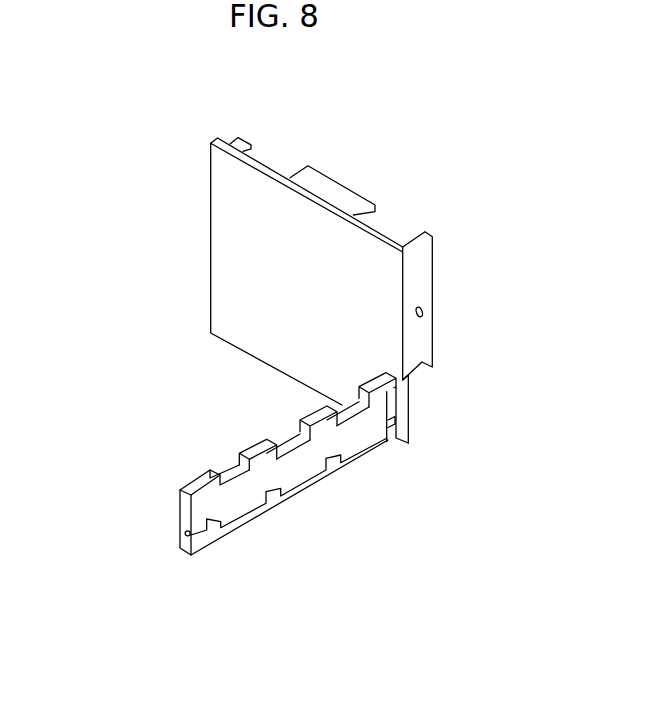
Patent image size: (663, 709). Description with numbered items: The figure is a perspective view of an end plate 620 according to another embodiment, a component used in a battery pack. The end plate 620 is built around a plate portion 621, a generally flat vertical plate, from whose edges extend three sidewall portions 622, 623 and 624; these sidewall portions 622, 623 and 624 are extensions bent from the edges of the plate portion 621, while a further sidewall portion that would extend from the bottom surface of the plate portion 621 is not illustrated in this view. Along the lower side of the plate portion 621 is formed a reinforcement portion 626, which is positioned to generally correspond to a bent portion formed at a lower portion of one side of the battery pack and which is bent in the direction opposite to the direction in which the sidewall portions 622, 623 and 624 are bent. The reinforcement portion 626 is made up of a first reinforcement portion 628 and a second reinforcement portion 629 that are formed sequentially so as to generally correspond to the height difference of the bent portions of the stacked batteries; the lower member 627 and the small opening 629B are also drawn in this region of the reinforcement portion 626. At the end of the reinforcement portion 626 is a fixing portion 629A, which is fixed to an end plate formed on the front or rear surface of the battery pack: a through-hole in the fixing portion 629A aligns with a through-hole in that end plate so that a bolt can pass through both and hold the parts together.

The end plate 620 is at (55, 85).
The plate portion 621 is at (383, 221).
The sidewall portion 622 is at (333, 190).
The sidewall portion 623 is at (242, 139).
The sidewall portion 624 is at (422, 275).
The reinforcement portion 626 is at (328, 482).
The lower plate 627 is at (246, 507).
The first reinforcement portion 628 is at (200, 480).
The second reinforcement portion 629 is at (262, 445).
The fixing portion 629A is at (183, 508).
The hole 629B is at (186, 537).